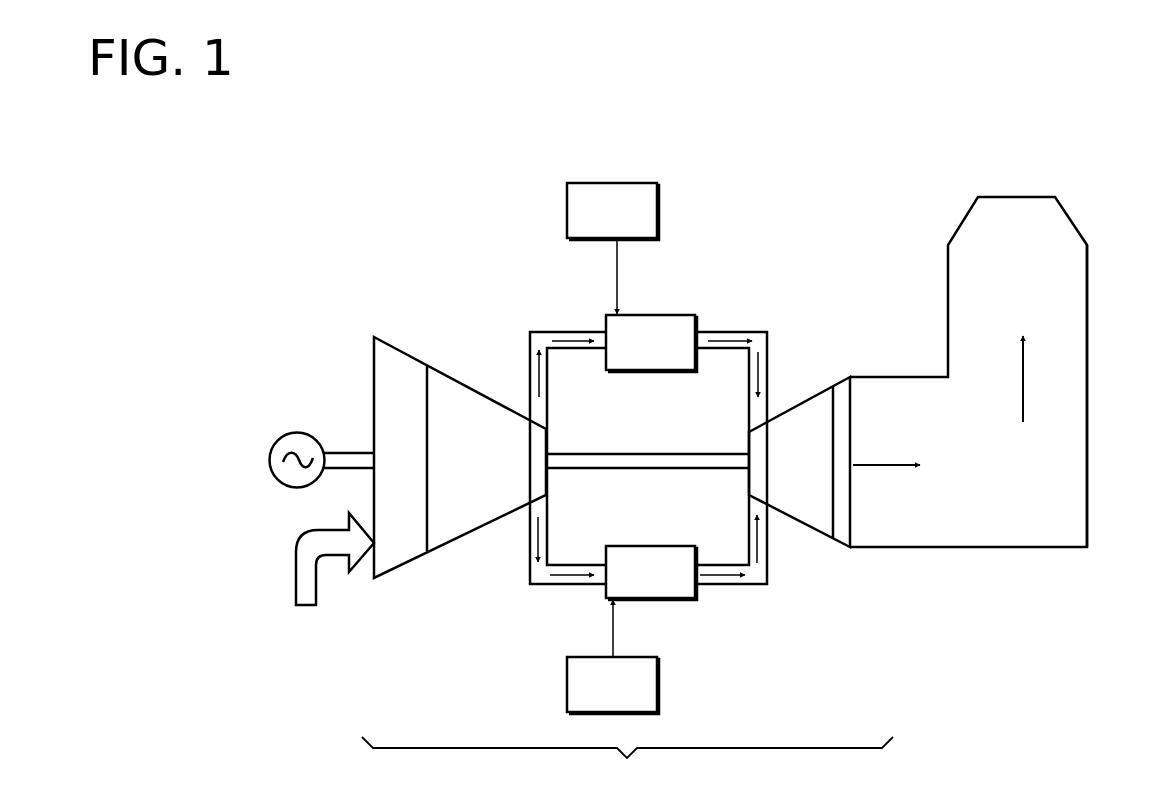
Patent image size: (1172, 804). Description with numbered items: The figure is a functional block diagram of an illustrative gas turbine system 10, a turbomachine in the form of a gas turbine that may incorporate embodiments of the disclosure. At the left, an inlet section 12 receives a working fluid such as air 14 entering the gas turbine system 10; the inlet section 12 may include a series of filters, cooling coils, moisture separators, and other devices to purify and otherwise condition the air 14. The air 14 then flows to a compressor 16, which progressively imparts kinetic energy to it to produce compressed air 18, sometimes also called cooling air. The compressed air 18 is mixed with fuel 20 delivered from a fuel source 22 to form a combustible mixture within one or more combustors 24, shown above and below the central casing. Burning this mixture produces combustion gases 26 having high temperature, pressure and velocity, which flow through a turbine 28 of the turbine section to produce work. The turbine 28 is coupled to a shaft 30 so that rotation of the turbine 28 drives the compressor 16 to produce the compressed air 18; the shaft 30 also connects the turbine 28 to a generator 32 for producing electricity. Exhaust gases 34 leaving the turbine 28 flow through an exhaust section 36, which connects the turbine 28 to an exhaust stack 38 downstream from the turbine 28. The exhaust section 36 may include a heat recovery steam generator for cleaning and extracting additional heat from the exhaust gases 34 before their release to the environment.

The gas turbine system 10 is at (627, 763).
The inlet section 12 is at (417, 470).
The air 14 is at (302, 606).
The compressor 16 is at (501, 470).
The compressed air 18 is at (538, 380).
The fuel 20 is at (618, 273).
The fuel source 22 is at (627, 220).
The combustor 24 is at (639, 352).
The combustion gases 26 is at (757, 368).
The turbine 28 is at (782, 474).
The shaft 30 is at (615, 469).
The generator 32 is at (297, 432).
The exhaust gases 34 is at (874, 466).
The exhaust section 36 is at (1000, 496).
The exhaust stack 38 is at (1087, 288).